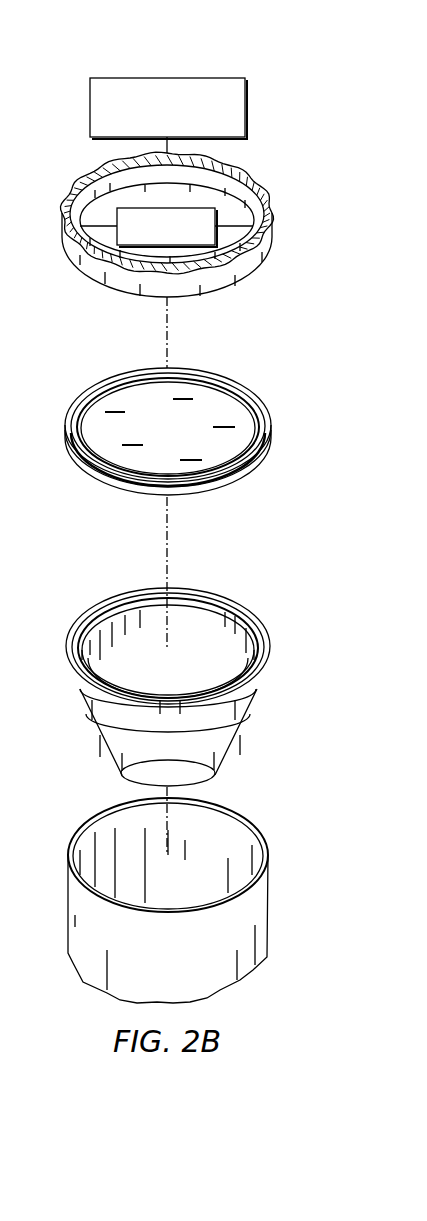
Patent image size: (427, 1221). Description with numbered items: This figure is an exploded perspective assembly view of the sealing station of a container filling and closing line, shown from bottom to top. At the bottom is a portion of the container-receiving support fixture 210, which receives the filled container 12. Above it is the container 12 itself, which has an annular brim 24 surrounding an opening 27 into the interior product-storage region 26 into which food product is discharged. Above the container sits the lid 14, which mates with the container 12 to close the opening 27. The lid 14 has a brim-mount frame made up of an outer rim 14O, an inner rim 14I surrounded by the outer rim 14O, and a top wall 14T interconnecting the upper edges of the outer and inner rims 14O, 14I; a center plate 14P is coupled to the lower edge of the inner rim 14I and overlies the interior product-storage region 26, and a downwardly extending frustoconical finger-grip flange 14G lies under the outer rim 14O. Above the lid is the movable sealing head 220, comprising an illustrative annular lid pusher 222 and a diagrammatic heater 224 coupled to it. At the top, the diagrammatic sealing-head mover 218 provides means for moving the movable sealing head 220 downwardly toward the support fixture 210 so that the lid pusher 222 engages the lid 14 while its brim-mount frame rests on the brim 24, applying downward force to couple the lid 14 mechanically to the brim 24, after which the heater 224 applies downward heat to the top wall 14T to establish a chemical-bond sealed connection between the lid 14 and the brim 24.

The sealing head mover 218 is at (140, 78).
The movable sealing head 220 is at (310, 194).
The lid pusher 222 is at (268, 251).
The heater 224 is at (200, 208).
The lid 14 is at (159, 423).
The top wall 14T is at (97, 387).
The center plate 14P is at (212, 408).
The outer rim 14O is at (68, 426).
The inner rim 14I is at (107, 413).
The finger-grip flange 14G is at (93, 478).
The container 12 is at (182, 681).
The brim 24 is at (189, 640).
The interior product-storage region 26 is at (127, 662).
The opening 27 is at (268, 633).
The container-receiving support fixture 210 is at (272, 905).